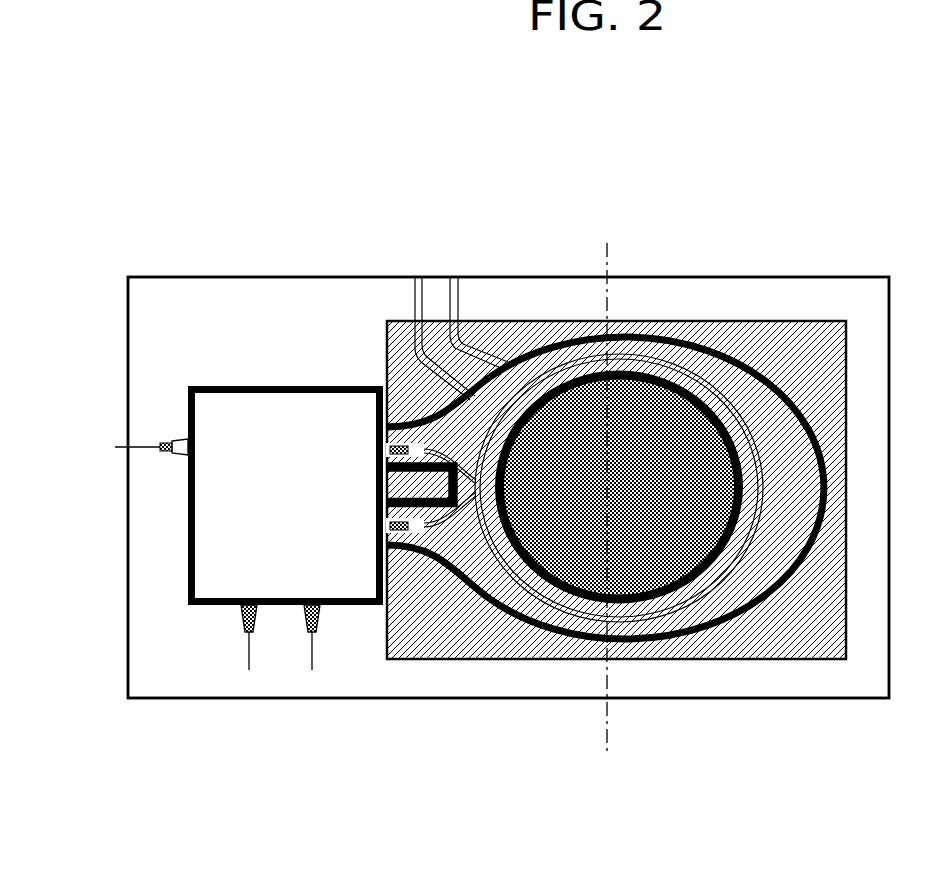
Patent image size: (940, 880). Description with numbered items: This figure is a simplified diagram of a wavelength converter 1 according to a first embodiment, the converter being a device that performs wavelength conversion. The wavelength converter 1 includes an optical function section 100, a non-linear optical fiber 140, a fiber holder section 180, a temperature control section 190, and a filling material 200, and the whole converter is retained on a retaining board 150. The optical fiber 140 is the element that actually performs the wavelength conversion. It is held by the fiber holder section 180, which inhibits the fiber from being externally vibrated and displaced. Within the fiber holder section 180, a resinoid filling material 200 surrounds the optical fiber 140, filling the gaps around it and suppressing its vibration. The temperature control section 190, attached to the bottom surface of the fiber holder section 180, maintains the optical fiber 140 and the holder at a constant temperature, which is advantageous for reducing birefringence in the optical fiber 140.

The wavelength converter 1 is at (692, 275).
The optical function section 100 is at (275, 385).
The non-linear optical fiber 140 is at (772, 400).
The retaining board 150 is at (370, 680).
The fiber holder section 180 is at (733, 628).
The temperature control section 190 is at (458, 272).
The filling material 200 is at (565, 640).